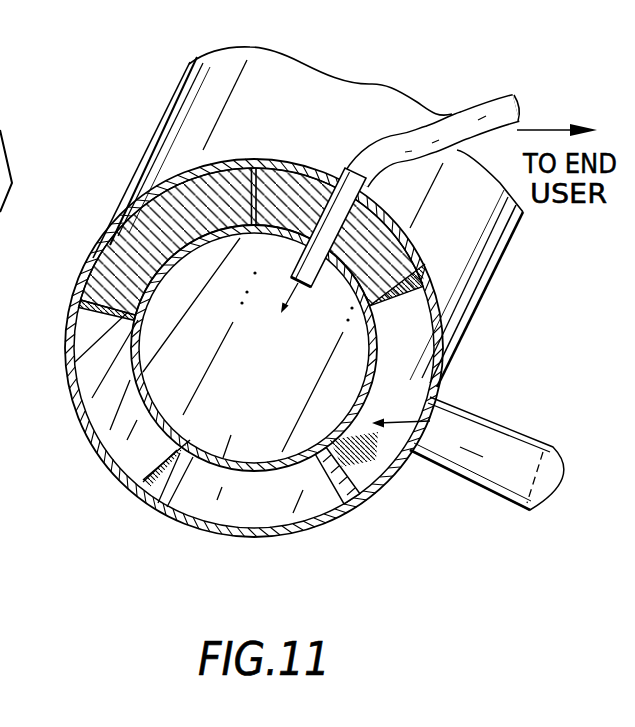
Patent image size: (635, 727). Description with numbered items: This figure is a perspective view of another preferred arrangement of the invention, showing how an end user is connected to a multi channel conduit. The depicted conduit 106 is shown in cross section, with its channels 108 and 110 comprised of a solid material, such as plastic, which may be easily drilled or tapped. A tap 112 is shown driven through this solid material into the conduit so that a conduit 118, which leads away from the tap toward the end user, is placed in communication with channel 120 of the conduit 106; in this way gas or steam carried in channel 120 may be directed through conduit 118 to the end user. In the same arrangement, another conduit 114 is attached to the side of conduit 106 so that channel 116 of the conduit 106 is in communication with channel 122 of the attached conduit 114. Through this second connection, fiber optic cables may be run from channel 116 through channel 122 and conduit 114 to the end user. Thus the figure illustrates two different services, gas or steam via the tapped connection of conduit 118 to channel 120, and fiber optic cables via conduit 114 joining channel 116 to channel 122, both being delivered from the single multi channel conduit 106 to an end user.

The conduit 106 is at (177, 147).
The channel 108 is at (412, 268).
The channel 110 is at (130, 251).
The tap 112 is at (340, 176).
The conduit 114 is at (490, 490).
The channel 116 is at (377, 487).
The conduit 118 is at (452, 116).
The channel 120 is at (200, 440).
The channel 122 is at (497, 430).